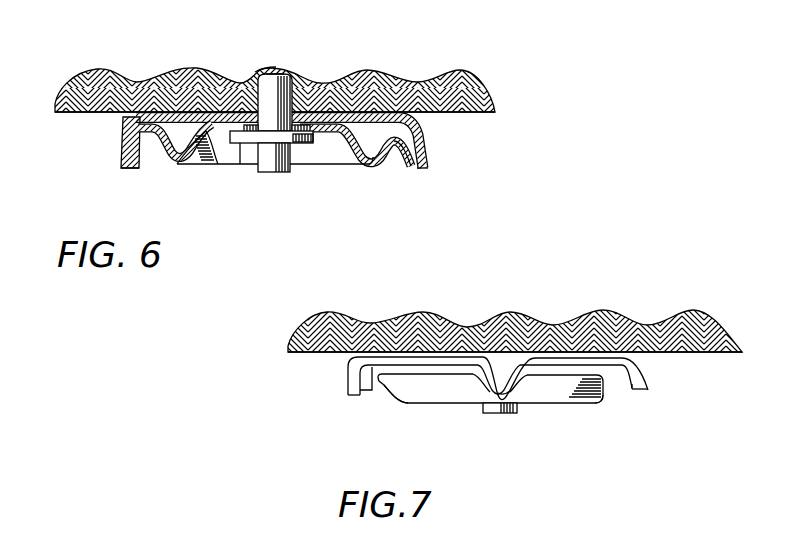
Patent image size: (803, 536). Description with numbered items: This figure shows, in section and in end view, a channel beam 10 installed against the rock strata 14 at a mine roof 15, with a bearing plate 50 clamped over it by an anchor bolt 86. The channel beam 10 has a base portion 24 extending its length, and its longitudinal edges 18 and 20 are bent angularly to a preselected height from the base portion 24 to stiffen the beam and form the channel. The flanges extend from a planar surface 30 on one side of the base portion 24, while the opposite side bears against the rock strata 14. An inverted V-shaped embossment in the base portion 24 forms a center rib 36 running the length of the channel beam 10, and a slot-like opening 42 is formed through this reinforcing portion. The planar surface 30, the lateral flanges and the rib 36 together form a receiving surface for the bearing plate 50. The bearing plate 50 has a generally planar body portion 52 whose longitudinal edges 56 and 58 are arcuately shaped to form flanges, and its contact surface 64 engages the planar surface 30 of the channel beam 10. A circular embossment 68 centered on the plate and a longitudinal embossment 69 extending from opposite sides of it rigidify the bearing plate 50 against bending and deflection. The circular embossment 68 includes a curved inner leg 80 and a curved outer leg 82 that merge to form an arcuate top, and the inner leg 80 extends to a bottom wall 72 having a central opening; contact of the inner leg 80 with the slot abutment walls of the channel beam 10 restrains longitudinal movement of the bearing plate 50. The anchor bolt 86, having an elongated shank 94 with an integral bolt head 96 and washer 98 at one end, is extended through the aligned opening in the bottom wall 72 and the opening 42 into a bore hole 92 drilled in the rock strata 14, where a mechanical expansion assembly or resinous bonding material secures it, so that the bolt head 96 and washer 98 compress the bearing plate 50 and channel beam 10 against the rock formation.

In FIG. 6, the channel beam 10 is at (444, 138).
In FIG. 7, the channel beam 10 is at (658, 366).
In FIG. 7, the rock strata 14 is at (325, 317).
In FIG. 6, the mine roof 15 is at (105, 113).
In FIG. 7, the mine roof 15 is at (327, 354).
In FIG. 6, the longitudinal edge 18 is at (429, 169).
In FIG. 7, the longitudinal edge 18 is at (650, 392).
In FIG. 6, the longitudinal edge 20 is at (128, 169).
In FIG. 7, the longitudinal edge 20 is at (348, 389).
In FIG. 7, the base portion 24 is at (400, 358).
In FIG. 7, the planar surface 30 is at (568, 367).
In FIG. 7, the rib 36 is at (495, 350).
In FIG. 6, the opening 42 is at (254, 107).
In FIG. 6, the bearing plate 50 is at (258, 180).
In FIG. 7, the bearing plate 50 is at (551, 416).
In FIG. 7, the body portion 52 is at (423, 375).
In FIG. 6, the longitudinal edge 56 is at (413, 170).
In FIG. 7, the longitudinal edge 56 is at (635, 391).
In FIG. 6, the longitudinal edge 58 is at (137, 169).
In FIG. 7, the longitudinal edge 58 is at (367, 393).
In FIG. 7, the contact surface 64 is at (582, 363).
In FIG. 6, the circular embossment 68 is at (182, 164).
In FIG. 7, the circular embossment 68 is at (400, 404).
In FIG. 7, the longitudinal embossment 69 is at (480, 388).
In FIG. 6, the bottom wall 72 is at (226, 164).
In FIG. 6, the inner leg 80 is at (345, 145).
In FIG. 6, the outer leg 82 is at (384, 162).
In FIG. 6, the anchor bolt 86 is at (266, 118).
In FIG. 6, the bore hole 92 is at (268, 80).
In FIG. 6, the shank 94 is at (264, 77).
In FIG. 6, the bolt head 96 is at (283, 173).
In FIG. 7, the bolt head 96 is at (492, 413).
In FIG. 6, the washer 98 is at (240, 164).